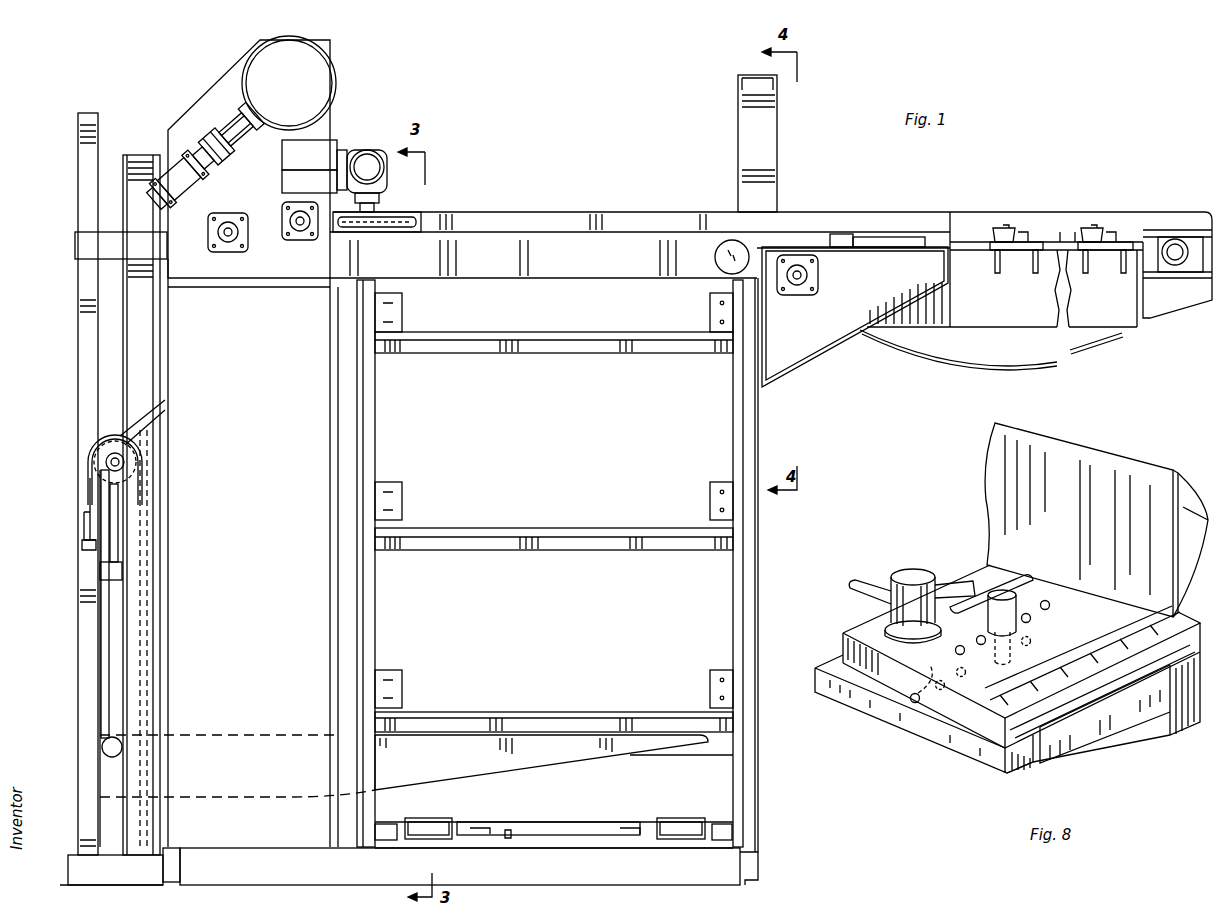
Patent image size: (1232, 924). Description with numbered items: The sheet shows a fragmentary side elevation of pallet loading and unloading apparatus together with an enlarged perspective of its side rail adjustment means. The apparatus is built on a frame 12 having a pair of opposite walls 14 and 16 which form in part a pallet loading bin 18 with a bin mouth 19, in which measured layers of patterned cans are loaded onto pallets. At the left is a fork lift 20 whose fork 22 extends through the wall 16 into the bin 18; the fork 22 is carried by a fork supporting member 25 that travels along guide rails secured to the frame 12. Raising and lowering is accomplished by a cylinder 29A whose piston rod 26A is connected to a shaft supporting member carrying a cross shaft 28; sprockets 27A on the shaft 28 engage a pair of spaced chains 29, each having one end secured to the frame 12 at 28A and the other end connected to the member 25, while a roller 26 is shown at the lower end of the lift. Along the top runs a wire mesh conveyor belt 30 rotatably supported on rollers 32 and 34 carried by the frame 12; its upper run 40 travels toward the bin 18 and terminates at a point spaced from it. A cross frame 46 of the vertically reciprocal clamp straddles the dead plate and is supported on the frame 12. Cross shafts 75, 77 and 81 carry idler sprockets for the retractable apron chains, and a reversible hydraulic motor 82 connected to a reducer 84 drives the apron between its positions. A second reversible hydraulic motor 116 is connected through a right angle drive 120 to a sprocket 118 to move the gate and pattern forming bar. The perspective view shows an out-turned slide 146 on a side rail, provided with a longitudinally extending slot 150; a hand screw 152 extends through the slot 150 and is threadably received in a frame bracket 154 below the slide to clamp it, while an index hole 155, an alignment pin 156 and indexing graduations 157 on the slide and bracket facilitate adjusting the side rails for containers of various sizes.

In FIG. 1, the frame 12 is at (768, 556).
In FIG. 8, the frame 12 is at (1178, 732).
In FIG. 1, the wall 14 is at (758, 414).
In FIG. 1, the wall 16 is at (365, 410).
In FIG. 1, the pallet loading bin 18 is at (730, 796).
In FIG. 1, the bin mouth 19 is at (545, 163).
In FIG. 1, the fork lift 20 is at (77, 462).
In FIG. 1, the fork 22 is at (555, 757).
In FIG. 1, the fork supporting member 25 is at (110, 797).
In FIG. 1, the roller 26 is at (86, 752).
In FIG. 1, the piston rod 26A is at (118, 497).
In FIG. 1, the sprockets 27A is at (128, 447).
In FIG. 1, the cross shaft 28 is at (124, 462).
In FIG. 1, the chain anchor point 28A is at (96, 540).
In FIG. 1, the chains 29 is at (150, 537).
In FIG. 1, the cylinder 29A is at (112, 640).
In FIG. 1, the conveyor belt 30 is at (1000, 366).
In FIG. 1, the roller 32 is at (797, 285).
In FIG. 1, the roller 34 is at (1177, 240).
In FIG. 1, the upper run 40 is at (940, 237).
In FIG. 1, the cross frame 46 is at (738, 115).
In FIG. 1, the cross shaft 75 is at (228, 232).
In FIG. 1, the cross shaft 77 is at (300, 221).
In FIG. 1, the cross shaft 81 is at (745, 230).
In FIG. 1, the reversible hydraulic motor 82 is at (160, 197).
In FIG. 1, the reducer 84 is at (323, 73).
In FIG. 1, the reversible hydraulic motor 116 is at (367, 152).
In FIG. 1, the sprocket 118 is at (393, 213).
In FIG. 1, the right angle drive 120 is at (385, 182).
In FIG. 1, the slide 146 is at (1052, 232).
In FIG. 8, the slide 146 is at (1033, 558).
In FIG. 8, the slot 150 is at (965, 597).
In FIG. 1, the hand screw 152 is at (1008, 228).
In FIG. 8, the hand screw 152 is at (870, 583).
In FIG. 1, the frame bracket 154 is at (1017, 258).
In FIG. 8, the frame bracket 154 is at (1020, 774).
In FIG. 8, the index hole 155 is at (914, 703).
In FIG. 8, the alignment pin 156 is at (1016, 600).
In FIG. 8, the indexing graduations 157 is at (1090, 650).